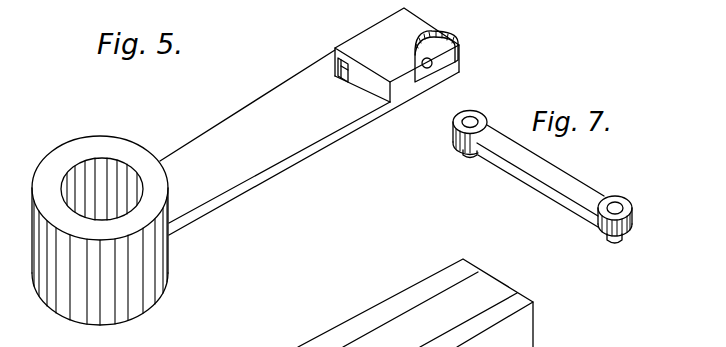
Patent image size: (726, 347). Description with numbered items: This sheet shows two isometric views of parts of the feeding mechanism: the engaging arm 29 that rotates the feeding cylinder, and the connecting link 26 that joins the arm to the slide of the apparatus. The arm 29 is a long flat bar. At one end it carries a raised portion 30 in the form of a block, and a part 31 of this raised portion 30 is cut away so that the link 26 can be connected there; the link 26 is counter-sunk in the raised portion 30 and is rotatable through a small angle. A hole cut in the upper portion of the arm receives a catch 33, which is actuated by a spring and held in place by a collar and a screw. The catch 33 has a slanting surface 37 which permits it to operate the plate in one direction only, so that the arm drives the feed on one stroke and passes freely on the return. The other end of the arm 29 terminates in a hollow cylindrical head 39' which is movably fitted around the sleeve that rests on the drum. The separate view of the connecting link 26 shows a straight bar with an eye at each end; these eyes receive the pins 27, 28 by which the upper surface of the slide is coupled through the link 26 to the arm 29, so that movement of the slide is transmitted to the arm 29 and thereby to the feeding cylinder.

In FIG. 5, the head 39' is at (107, 221).
In FIG. 5, the arm 29 is at (270, 157).
In FIG. 5, the raised portion 30 is at (428, 30).
In FIG. 5, the part 31 is at (442, 64).
In FIG. 5, the catch 33 is at (334, 62).
In FIG. 5, the slanting surface 37 is at (339, 74).
In FIG. 7, the link 26 is at (580, 183).
In FIG. 7, the pin 28 is at (463, 157).
In FIG. 7, the pin 27 is at (617, 245).